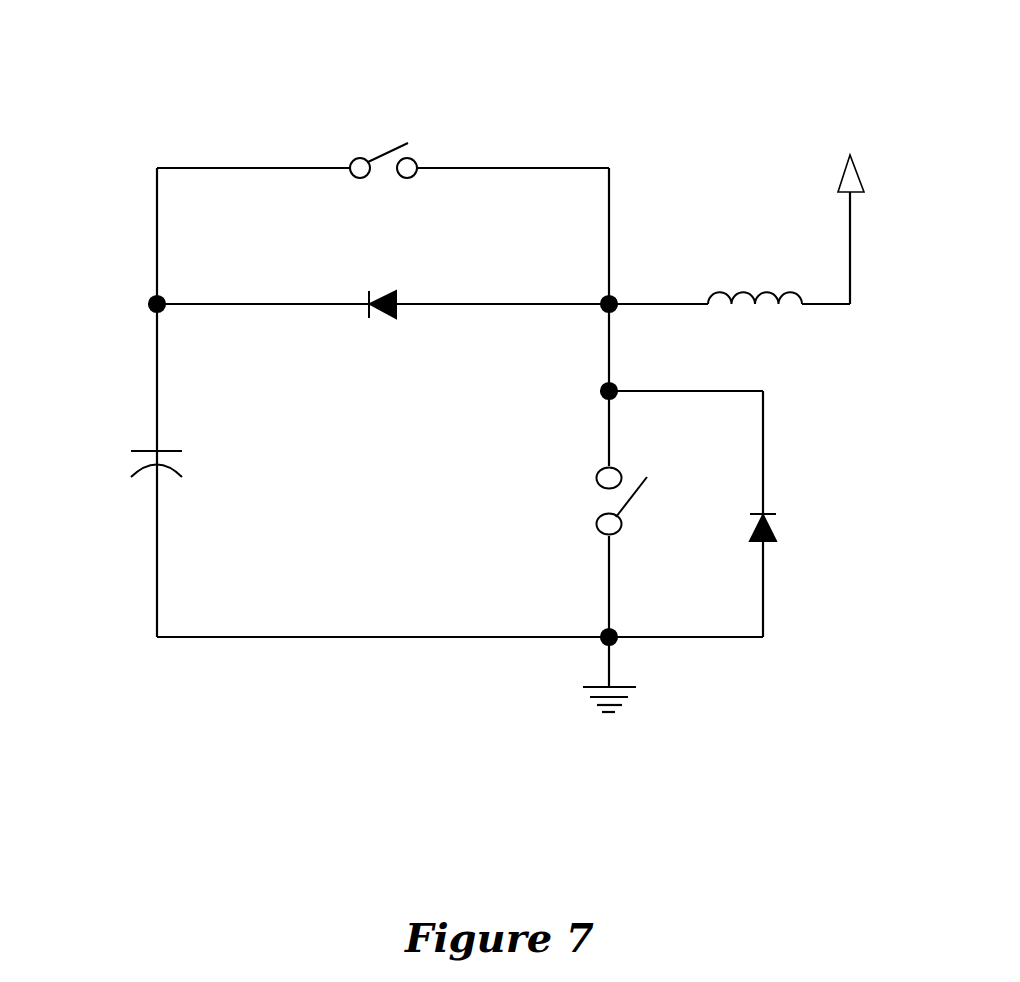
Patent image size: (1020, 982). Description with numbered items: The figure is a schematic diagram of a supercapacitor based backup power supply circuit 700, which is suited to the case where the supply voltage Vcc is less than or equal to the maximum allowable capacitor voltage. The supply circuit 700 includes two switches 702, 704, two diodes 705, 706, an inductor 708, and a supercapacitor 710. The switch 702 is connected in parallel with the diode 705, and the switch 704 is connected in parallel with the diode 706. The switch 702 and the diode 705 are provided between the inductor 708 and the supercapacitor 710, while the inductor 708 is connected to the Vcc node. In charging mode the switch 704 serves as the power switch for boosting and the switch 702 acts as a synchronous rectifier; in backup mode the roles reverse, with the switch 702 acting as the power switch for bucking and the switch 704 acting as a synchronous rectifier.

The backup power supply circuit 700 is at (595, 112).
The switch 702 is at (380, 130).
The switch 704 is at (573, 502).
The diode 705 is at (395, 290).
The diode 706 is at (772, 540).
The inductor 708 is at (735, 280).
The supercapacitor 710 is at (132, 438).